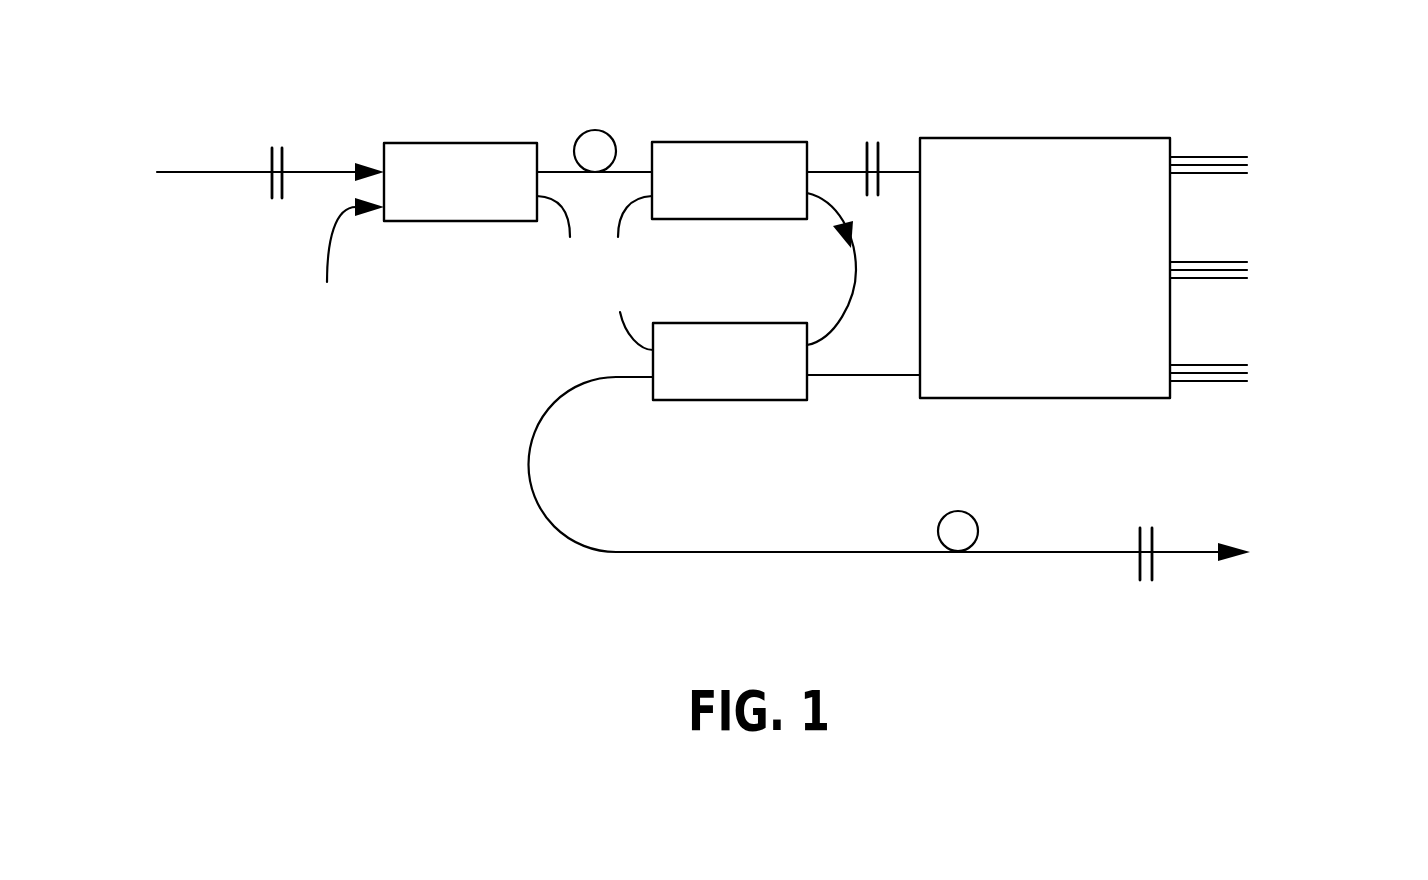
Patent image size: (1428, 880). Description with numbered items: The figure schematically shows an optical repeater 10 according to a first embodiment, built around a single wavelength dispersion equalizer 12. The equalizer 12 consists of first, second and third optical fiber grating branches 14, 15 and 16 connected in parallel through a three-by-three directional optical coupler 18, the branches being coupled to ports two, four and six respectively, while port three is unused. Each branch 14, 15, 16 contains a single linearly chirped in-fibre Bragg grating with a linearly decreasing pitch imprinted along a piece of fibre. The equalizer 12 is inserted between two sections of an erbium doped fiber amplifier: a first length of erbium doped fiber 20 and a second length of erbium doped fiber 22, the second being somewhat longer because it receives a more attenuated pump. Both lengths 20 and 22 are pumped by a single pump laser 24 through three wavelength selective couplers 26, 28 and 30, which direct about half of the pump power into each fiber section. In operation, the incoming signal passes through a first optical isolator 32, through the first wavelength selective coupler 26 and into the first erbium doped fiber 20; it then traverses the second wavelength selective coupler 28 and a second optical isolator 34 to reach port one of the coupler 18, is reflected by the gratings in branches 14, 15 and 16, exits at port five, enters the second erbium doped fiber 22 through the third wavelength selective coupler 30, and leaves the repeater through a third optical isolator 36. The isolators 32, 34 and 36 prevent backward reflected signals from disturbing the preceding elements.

The optical repeater 10 is at (410, 523).
The wavelength dispersion equalizer 12 is at (1014, 91).
The first optical fiber grating branch 14 is at (1243, 156).
The second optical fiber grating branch 15 is at (1243, 260).
The third optical fiber grating branch 16 is at (1243, 363).
The directional optical coupler 18 is at (917, 388).
The first length of erbium doped fiber 20 is at (572, 143).
The second length of erbium doped fiber 22 is at (937, 523).
The pump laser 24 is at (318, 245).
The first wavelength selective coupler 26 is at (472, 221).
The second wavelength selective coupler 28 is at (743, 140).
The third wavelength selective coupler 30 is at (737, 400).
The first optical isolator 32 is at (267, 160).
The second optical isolator 34 is at (858, 158).
The third optical isolator 36 is at (1138, 567).